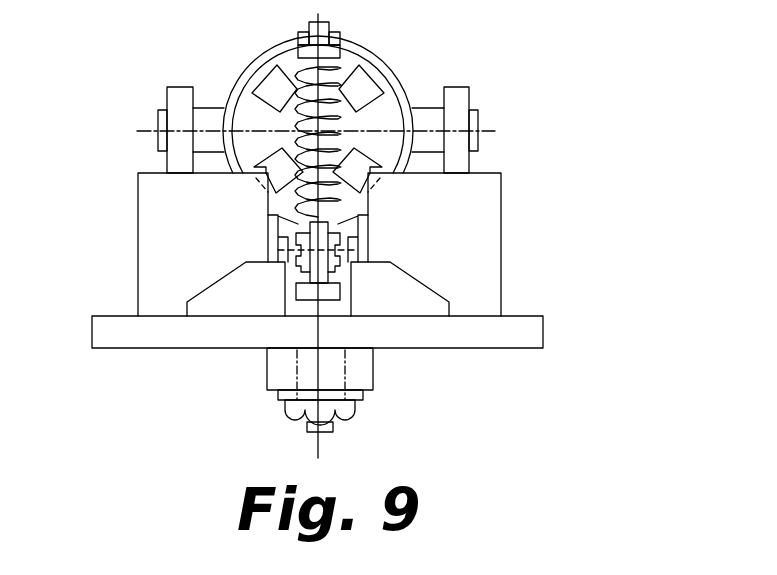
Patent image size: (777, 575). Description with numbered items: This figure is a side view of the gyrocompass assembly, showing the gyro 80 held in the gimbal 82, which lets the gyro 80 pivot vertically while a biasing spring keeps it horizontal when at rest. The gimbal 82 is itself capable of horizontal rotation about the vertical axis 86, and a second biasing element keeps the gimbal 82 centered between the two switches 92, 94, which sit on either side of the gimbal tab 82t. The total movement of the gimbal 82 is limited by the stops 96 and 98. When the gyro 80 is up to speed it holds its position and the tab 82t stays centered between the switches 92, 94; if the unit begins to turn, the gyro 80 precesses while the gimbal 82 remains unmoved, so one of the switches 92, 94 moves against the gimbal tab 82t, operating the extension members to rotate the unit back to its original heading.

The gyrocompass 80 is at (380, 53).
The gimbal 82 is at (182, 83).
The gimbal tab 82t is at (330, 246).
The vertical axis 86 is at (320, 442).
The switch 92 is at (155, 232).
The switch 94 is at (482, 205).
The stop 96 is at (208, 305).
The stop 98 is at (430, 302).